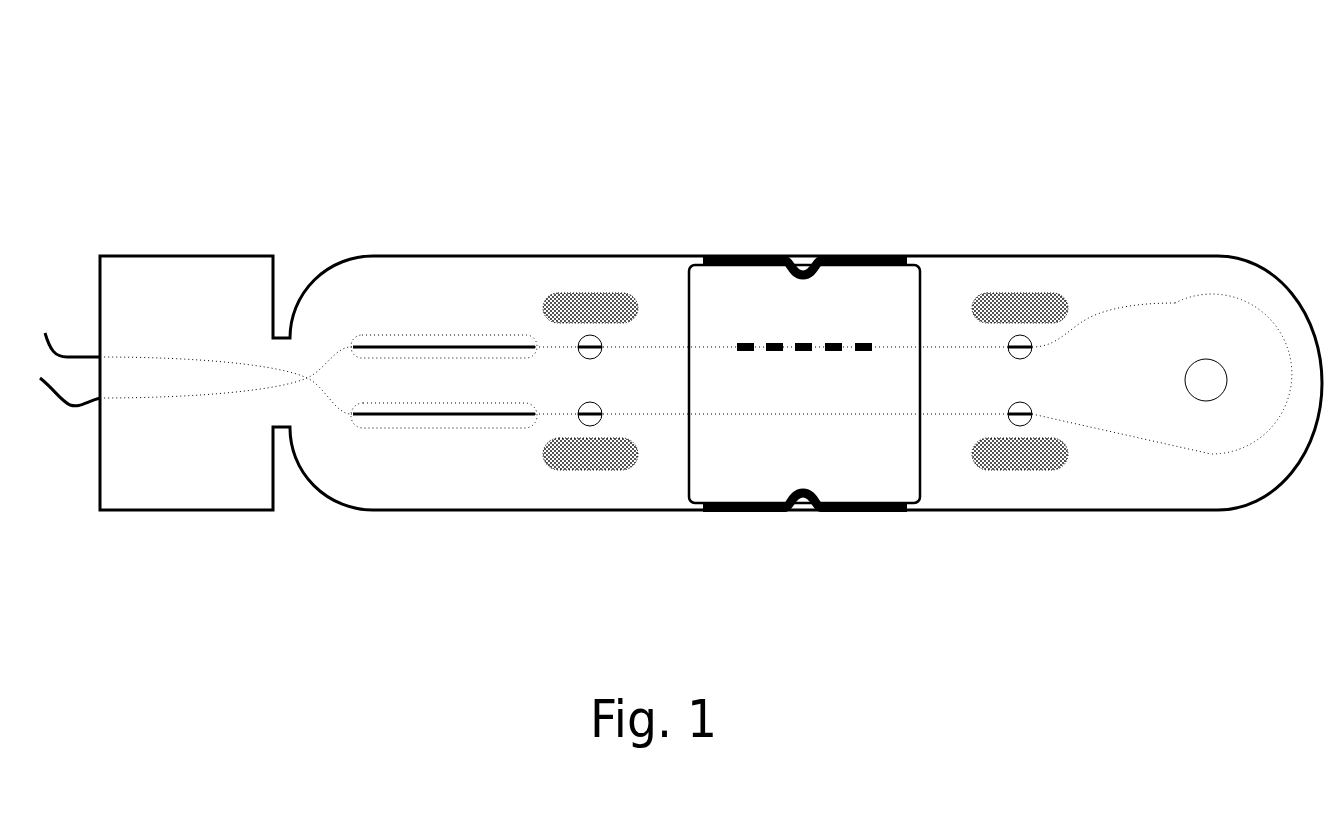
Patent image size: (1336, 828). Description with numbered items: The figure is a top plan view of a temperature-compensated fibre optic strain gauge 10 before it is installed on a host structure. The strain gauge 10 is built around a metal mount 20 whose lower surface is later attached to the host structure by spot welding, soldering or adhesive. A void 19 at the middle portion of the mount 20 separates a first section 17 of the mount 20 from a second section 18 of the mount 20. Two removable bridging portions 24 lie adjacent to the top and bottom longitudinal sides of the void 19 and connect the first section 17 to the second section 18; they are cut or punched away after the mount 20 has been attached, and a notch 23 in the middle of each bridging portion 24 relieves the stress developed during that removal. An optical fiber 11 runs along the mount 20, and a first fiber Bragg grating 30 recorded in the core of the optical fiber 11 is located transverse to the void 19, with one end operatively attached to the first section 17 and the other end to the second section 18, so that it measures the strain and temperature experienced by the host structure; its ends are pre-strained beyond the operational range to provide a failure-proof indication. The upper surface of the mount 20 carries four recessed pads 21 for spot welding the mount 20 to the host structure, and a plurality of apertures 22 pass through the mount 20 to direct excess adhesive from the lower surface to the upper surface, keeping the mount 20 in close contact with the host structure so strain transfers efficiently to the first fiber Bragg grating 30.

The temperature-compensated fibre optic strain gauge 10 is at (1062, 122).
The optical fiber 11 is at (730, 413).
The first section 17 is at (444, 381).
The second section 18 is at (1162, 374).
The void 19 is at (730, 313).
The mount 20 is at (420, 256).
The recessed pads 21 is at (590, 293).
The apertures 22 is at (597, 337).
The notch 23 is at (800, 265).
The bridging portions 24 is at (888, 256).
The first fiber Bragg grating 30 is at (830, 340).